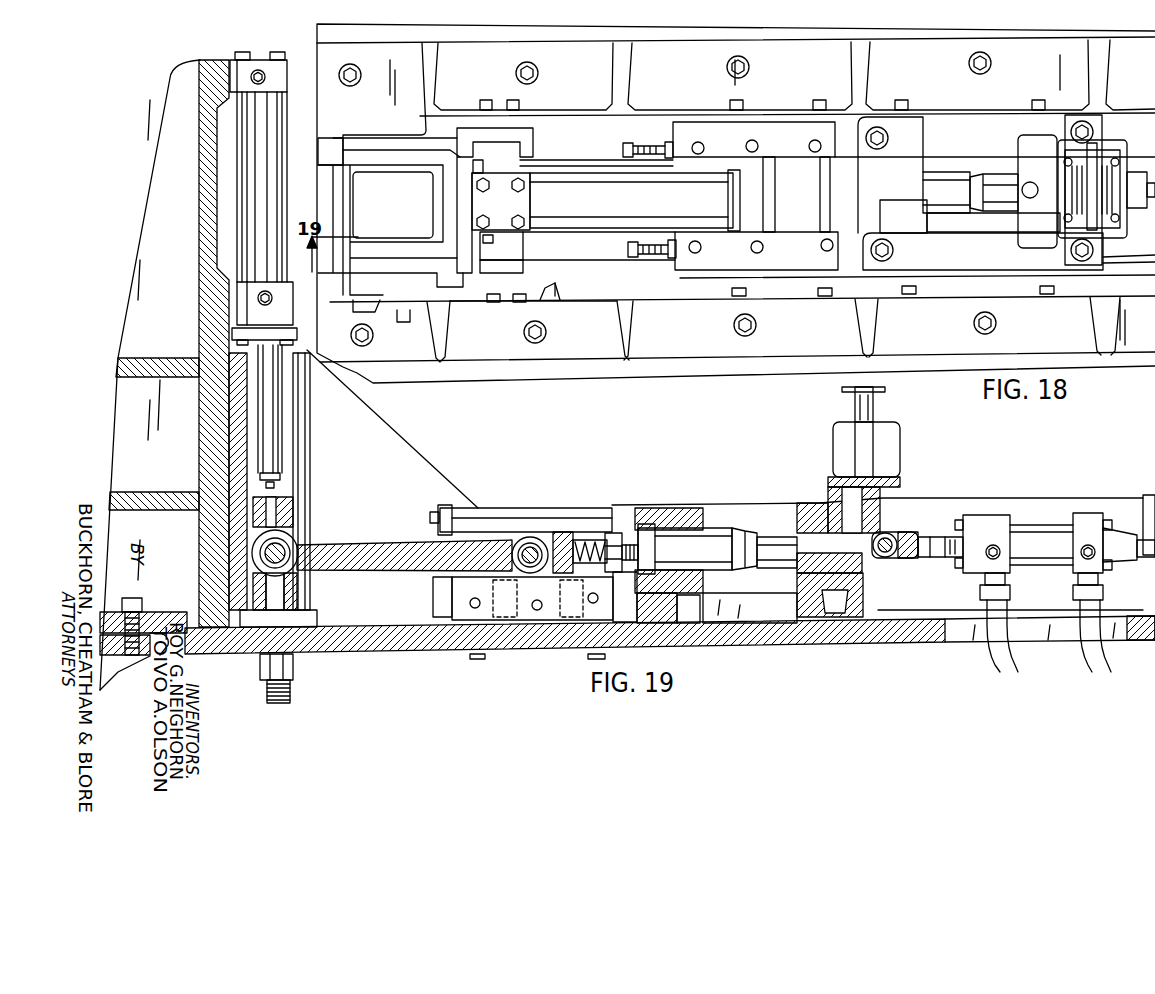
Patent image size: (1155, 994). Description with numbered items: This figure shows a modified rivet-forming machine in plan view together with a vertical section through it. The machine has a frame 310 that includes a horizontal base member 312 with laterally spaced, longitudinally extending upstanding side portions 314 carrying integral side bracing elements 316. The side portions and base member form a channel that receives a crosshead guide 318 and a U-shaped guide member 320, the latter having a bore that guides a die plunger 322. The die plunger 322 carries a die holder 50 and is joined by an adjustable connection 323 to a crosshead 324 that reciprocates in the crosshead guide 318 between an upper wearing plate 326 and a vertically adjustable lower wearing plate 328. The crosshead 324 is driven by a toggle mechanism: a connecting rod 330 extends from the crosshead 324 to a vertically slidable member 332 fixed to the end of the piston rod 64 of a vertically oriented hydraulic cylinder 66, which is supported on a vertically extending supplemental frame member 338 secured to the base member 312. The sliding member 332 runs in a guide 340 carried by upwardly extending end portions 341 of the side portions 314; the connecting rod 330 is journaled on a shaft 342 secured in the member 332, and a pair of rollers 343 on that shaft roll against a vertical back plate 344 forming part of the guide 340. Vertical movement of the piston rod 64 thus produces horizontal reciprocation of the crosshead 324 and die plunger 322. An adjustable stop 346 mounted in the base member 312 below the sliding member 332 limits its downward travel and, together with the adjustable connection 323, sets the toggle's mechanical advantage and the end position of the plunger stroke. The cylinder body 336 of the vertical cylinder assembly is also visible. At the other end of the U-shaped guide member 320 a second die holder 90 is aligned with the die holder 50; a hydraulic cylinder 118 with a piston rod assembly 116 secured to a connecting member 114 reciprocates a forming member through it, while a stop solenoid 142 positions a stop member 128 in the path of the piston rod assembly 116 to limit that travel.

In FIG. 18, the frame 310 is at (703, 381).
In FIG. 19, the frame 310 is at (800, 649).
In FIG. 18, the horizontal base member 312 is at (790, 348).
In FIG. 19, the horizontal base member 312 is at (870, 632).
In FIG. 18, the upstanding side portions 314 is at (782, 114).
In FIG. 19, the upstanding side portions 314 is at (775, 494).
In FIG. 18, the side bracing elements 316 is at (622, 80).
In FIG. 18, the crosshead guide 318 is at (571, 308).
In FIG. 18, the U-shaped guide member 320 is at (958, 262).
In FIG. 19, the U-shaped guide member 320 is at (656, 640).
In FIG. 18, the die plunger 322 is at (960, 157).
In FIG. 19, the die plunger 322 is at (707, 535).
In FIG. 18, the adjustable connection 323 is at (835, 190).
In FIG. 19, the adjustable connection 323 is at (628, 540).
In FIG. 18, the crosshead 324 is at (808, 234).
In FIG. 19, the crosshead 324 is at (587, 540).
In FIG. 19, the upper wearing plate 326 is at (538, 494).
In FIG. 19, the lower wearing plate 328 is at (463, 590).
In FIG. 19, the connecting rod 330 is at (377, 558).
In FIG. 18, the vertically slidable member 332 is at (523, 250).
In FIG. 19, the vertically slidable member 332 is at (300, 585).
In FIG. 18, the fluid cylinder 336 is at (524, 205).
In FIG. 19, the fluid cylinder 336 is at (260, 63).
In FIG. 18, the supplemental frame member 338 is at (475, 247).
In FIG. 19, the supplemental frame member 338 is at (206, 431).
In FIG. 18, the guide 340 is at (528, 150).
In FIG. 19, the guide 340 is at (300, 425).
In FIG. 18, the upwardly extending end portions 341 is at (545, 287).
In FIG. 19, the upwardly extending end portions 341 is at (390, 443).
In FIG. 19, the shaft 342 is at (293, 542).
In FIG. 19, the rollers 343 is at (253, 543).
In FIG. 19, the vertical back plate 344 is at (258, 592).
In FIG. 19, the adjustable stop 346 is at (258, 628).
In FIG. 19, the piston rod 64 is at (277, 455).
In FIG. 19, the hydraulic cylinder 66 is at (253, 224).
In FIG. 18, the die holder 50 is at (975, 183).
In FIG. 19, the die holder 50 is at (758, 564).
In FIG. 18, the second die holder 90 is at (1003, 205).
In FIG. 19, the second die holder 90 is at (781, 563).
In FIG. 19, the connecting member 114 is at (878, 537).
In FIG. 19, the piston rod assembly 116 is at (950, 553).
In FIG. 19, the hydraulic cylinder 118 is at (1043, 556).
In FIG. 19, the stop member 128 is at (865, 508).
In FIG. 18, the stop solenoid 142 is at (1106, 160).
In FIG. 19, the stop solenoid 142 is at (893, 452).